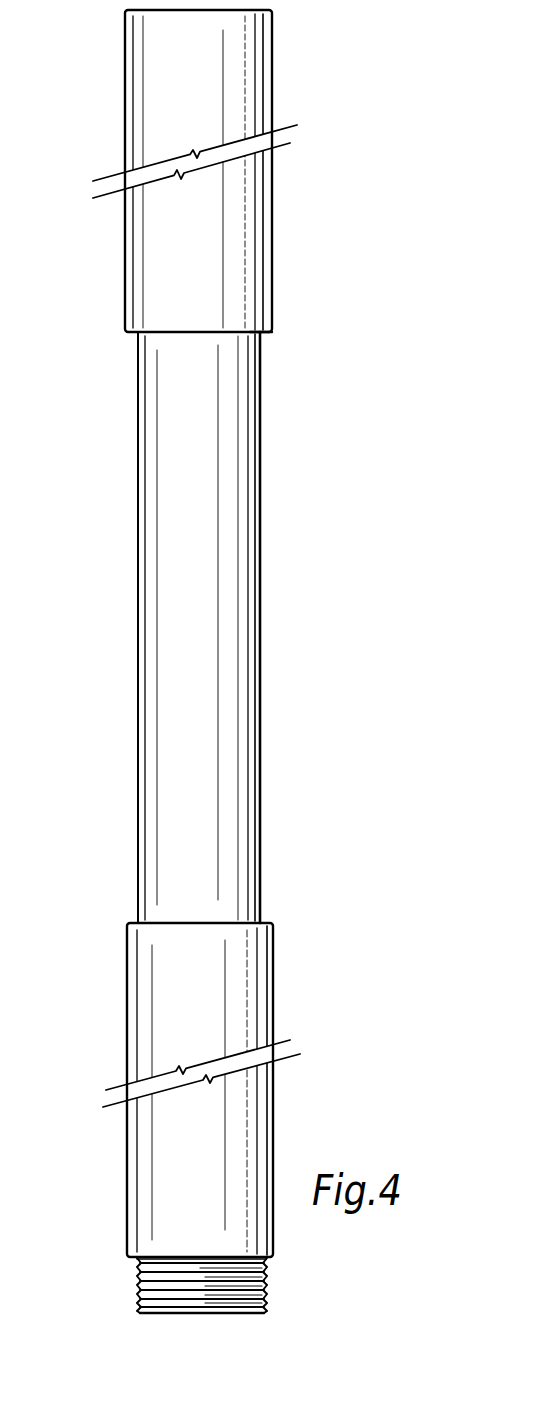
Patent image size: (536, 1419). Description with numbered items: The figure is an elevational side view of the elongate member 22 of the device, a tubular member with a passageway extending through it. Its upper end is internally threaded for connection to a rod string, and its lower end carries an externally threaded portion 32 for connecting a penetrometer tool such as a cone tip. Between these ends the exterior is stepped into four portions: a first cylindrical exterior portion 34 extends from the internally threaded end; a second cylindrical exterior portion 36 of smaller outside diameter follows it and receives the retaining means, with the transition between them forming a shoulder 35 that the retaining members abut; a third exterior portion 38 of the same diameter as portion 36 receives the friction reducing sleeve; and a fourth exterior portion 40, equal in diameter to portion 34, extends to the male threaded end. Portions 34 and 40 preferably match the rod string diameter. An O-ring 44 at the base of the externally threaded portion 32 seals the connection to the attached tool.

The elongate member 22 is at (215, 661).
The first cylindrical exterior portion 34 is at (258, 293).
The shoulder 35 is at (267, 334).
The second cylindrical exterior portion 36 is at (137, 360).
The third exterior portion 38 is at (262, 790).
The fourth exterior portion 40 is at (273, 992).
The O-ring 44 is at (137, 1265).
The externally threaded portion 32 is at (138, 1295).